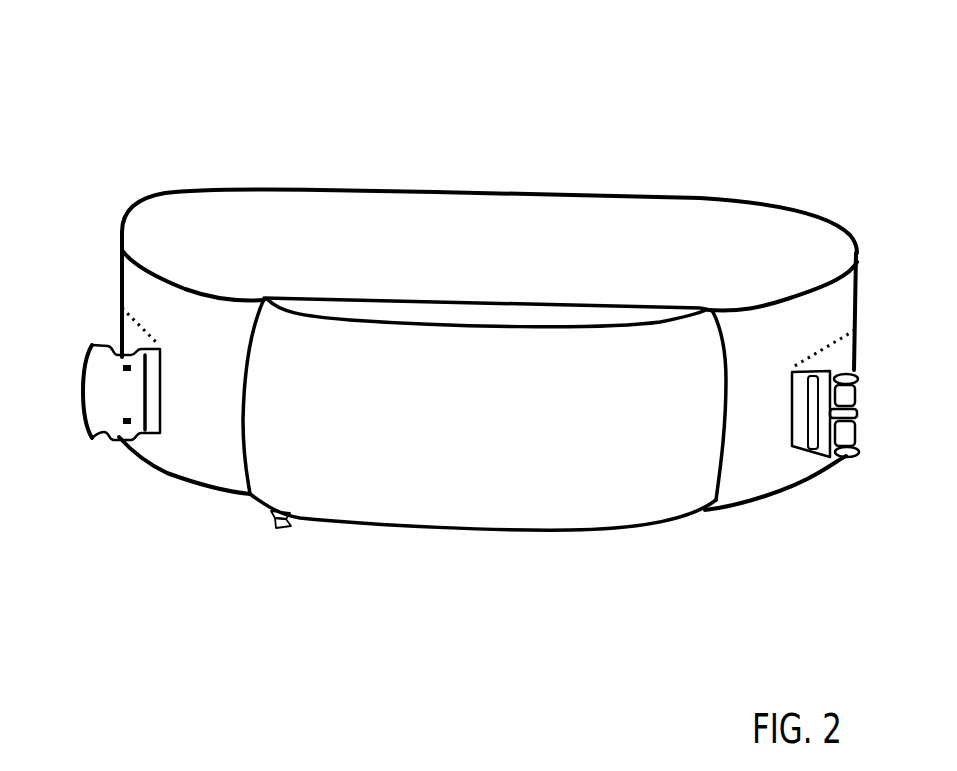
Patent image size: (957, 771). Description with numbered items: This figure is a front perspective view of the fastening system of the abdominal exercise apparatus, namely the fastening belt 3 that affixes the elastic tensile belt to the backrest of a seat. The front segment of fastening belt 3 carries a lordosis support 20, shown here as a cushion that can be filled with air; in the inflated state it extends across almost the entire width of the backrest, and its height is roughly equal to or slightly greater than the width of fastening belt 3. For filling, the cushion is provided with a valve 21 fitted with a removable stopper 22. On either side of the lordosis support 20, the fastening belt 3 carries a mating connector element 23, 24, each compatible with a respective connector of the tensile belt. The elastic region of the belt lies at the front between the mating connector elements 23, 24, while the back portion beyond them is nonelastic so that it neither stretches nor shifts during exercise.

The fastening belt 3 is at (538, 88).
The lordosis support 20 is at (577, 505).
The valve 21 is at (271, 515).
The removable stopper 22 is at (283, 528).
The mating connector element 23 is at (120, 421).
The mating connector element 24 is at (847, 457).